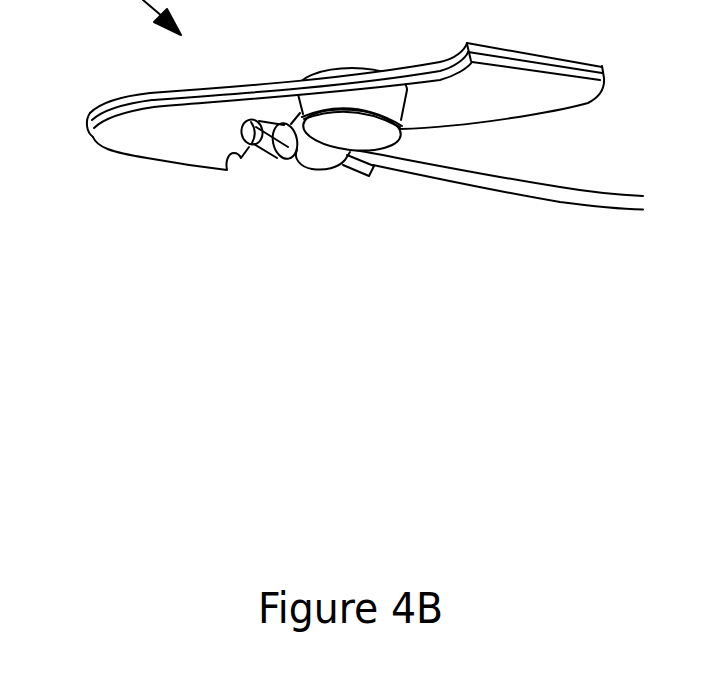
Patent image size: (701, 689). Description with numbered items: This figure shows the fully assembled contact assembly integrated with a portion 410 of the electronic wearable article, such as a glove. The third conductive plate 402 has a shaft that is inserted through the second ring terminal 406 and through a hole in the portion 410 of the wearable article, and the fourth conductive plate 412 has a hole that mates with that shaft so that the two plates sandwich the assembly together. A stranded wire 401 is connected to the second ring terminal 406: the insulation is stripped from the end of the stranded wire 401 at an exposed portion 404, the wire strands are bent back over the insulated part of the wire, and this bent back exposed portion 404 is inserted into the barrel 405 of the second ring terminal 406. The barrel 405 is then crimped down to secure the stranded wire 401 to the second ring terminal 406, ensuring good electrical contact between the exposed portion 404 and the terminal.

The stranded wire 401 is at (526, 176).
The third conductive plate 402 is at (392, 132).
The exposed portion 404 is at (368, 172).
The barrel 405 is at (308, 172).
The second ring terminal 406 is at (316, 112).
The portion of the electronic wearable article 410 is at (660, 56).
The fourth conductive plate 412 is at (332, 66).